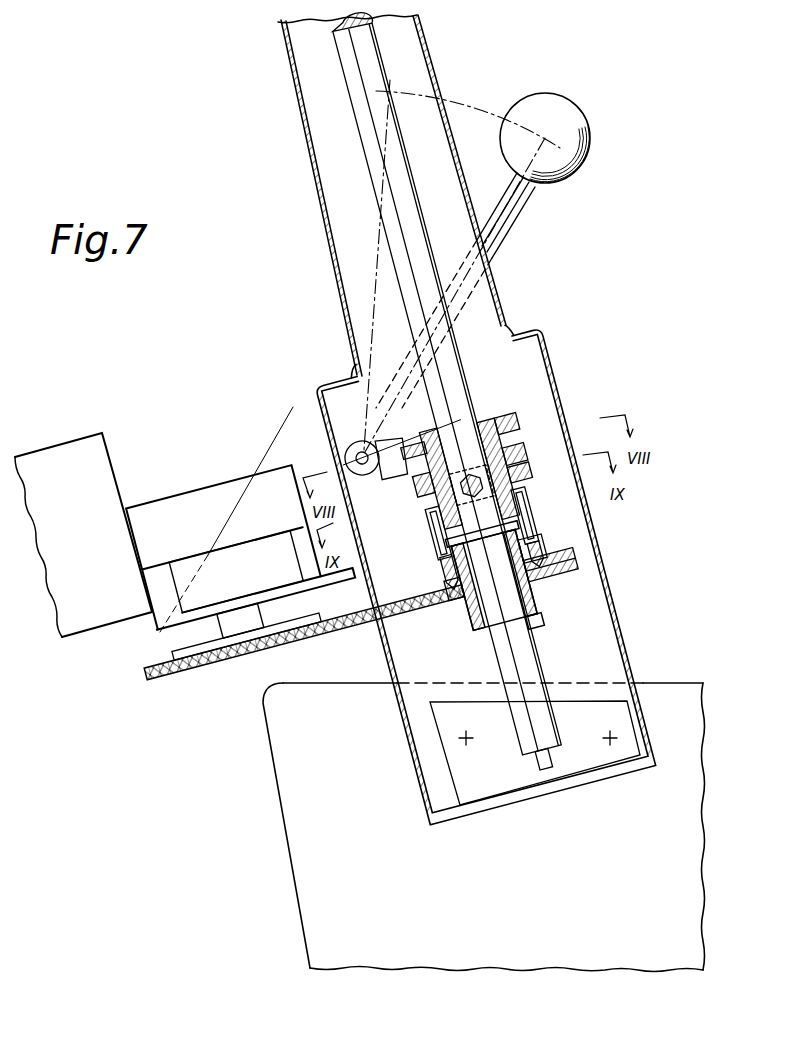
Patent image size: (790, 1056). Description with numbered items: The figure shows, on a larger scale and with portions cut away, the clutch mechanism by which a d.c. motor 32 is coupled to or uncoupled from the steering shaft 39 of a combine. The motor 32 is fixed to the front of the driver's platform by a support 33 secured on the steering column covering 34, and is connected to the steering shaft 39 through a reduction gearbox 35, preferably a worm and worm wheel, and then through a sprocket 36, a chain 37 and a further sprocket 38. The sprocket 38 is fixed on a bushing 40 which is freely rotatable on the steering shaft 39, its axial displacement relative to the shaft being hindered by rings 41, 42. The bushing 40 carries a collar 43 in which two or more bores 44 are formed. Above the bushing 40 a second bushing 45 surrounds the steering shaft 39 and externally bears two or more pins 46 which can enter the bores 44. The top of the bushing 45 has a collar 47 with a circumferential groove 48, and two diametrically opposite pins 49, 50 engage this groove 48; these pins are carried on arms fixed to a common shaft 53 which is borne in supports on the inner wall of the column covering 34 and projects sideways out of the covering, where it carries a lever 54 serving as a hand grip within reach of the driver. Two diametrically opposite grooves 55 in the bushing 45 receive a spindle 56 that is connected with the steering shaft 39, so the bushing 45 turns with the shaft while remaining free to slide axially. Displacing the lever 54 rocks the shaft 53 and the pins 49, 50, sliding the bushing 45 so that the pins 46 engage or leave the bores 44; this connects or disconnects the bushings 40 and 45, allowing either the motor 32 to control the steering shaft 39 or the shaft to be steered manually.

The d.c. motor 32 is at (58, 450).
The support 33 is at (312, 427).
The steering column covering 34 is at (326, 223).
The reduction gearbox 35 is at (161, 510).
The sprocket 36 is at (199, 673).
The chain 37 is at (369, 637).
The sprocket 38 is at (556, 577).
The steering shaft 39 is at (364, 122).
The bushing 40 is at (472, 622).
The ring 41 is at (452, 583).
The ring 42 is at (533, 612).
The collar 43 is at (538, 548).
The bores 44 is at (441, 560).
The second bushing 45 is at (518, 470).
The pins 46 is at (436, 526).
The collar 47 is at (488, 422).
The circumferential groove 48 is at (513, 427).
The pin 49 is at (465, 430).
The pin 50 is at (491, 432).
The common shaft 53 is at (360, 443).
The lever 54 is at (512, 214).
The grooves 55 is at (462, 500).
The spindle 56 is at (518, 456).